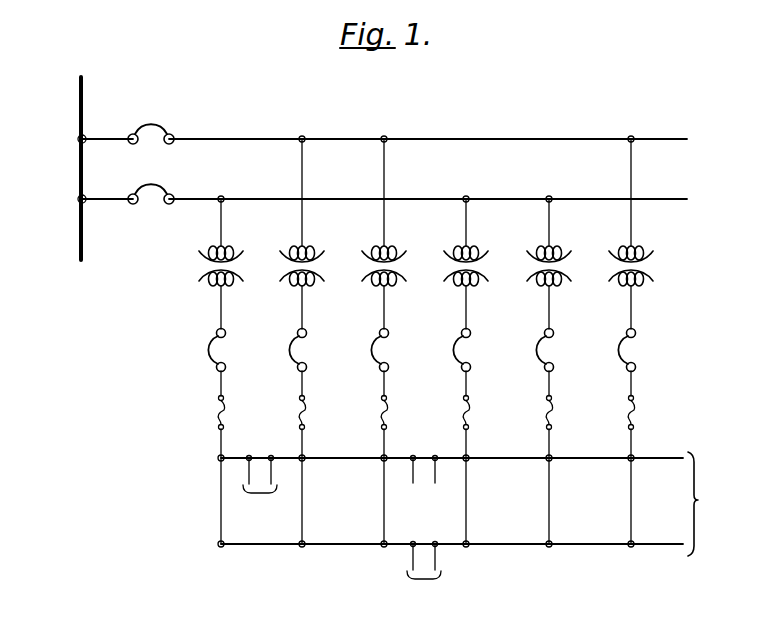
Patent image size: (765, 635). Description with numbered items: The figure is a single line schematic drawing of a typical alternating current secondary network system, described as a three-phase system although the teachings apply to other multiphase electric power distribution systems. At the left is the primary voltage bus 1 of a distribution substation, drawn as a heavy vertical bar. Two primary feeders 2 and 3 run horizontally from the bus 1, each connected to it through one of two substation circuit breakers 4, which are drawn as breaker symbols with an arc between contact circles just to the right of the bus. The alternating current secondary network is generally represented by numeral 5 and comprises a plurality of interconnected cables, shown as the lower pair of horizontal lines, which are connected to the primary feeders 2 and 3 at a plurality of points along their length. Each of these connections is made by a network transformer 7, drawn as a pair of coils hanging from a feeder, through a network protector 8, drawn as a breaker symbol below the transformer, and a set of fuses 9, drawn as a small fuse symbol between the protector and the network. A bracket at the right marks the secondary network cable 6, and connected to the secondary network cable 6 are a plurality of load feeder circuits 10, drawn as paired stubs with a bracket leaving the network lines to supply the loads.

The primary voltage bus 1 is at (80, 172).
The primary feeder 2 is at (514, 138).
The primary feeder 3 is at (513, 198).
The substation circuit breaker 4 is at (148, 120).
The alternating current secondary network 5 is at (351, 506).
The secondary network cable 6 is at (698, 500).
The network transformer 7 is at (280, 268).
The network protector 8 is at (287, 349).
The fuses 9 is at (298, 412).
The load feeder circuit 10 is at (260, 493).